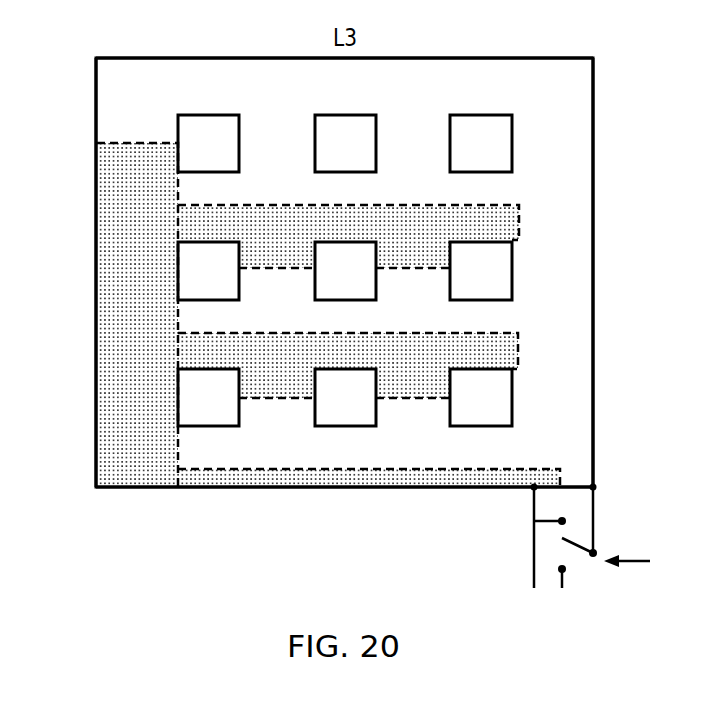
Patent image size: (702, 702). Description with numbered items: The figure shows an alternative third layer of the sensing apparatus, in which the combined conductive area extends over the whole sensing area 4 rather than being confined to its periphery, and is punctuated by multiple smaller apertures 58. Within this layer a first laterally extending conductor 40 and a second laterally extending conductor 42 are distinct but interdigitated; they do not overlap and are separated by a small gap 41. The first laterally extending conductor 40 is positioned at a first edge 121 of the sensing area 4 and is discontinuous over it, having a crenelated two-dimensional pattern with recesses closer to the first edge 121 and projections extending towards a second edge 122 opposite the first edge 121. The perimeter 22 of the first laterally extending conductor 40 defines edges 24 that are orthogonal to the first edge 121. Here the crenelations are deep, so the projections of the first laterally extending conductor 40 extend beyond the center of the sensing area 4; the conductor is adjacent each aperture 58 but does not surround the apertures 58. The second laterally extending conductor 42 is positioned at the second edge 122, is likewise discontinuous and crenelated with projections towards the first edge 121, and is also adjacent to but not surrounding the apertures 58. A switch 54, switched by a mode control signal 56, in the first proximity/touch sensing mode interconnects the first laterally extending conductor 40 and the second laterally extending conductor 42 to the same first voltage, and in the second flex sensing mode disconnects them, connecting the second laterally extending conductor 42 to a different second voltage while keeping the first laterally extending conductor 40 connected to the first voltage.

The sensing area 4 is at (520, 193).
The second laterally extending conductor 42 is at (143, 77).
The first edge 121 is at (96, 310).
The second edge 122 is at (593, 253).
The first laterally extending conductor 40 is at (143, 488).
The perimeter 22 is at (518, 333).
The edges 24 is at (388, 205).
The gap 41 is at (252, 205).
The apertures 58 is at (498, 410).
The switch 54 is at (622, 527).
The mode control signal 56 is at (633, 562).